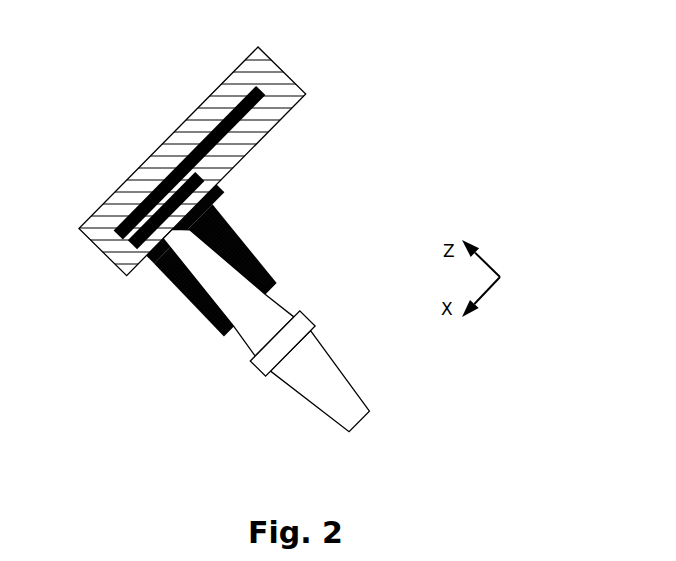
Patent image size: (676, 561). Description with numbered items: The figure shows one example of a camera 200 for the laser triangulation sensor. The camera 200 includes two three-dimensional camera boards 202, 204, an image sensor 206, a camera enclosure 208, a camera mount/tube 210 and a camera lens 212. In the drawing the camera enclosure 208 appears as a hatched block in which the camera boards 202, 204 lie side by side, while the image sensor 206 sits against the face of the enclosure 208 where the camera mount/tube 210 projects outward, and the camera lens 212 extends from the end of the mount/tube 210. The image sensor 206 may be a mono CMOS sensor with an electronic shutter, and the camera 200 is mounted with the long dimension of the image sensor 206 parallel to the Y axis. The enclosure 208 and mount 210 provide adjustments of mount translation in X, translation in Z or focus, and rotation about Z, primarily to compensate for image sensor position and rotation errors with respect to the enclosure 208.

The camera 200 is at (399, 98).
The 3D camera board 202 is at (112, 239).
The 3D camera board 204 is at (135, 250).
The image sensor 206 is at (142, 261).
The camera enclosure 208 is at (278, 66).
The camera mount/tube 210 is at (256, 257).
The camera lens 212 is at (309, 312).